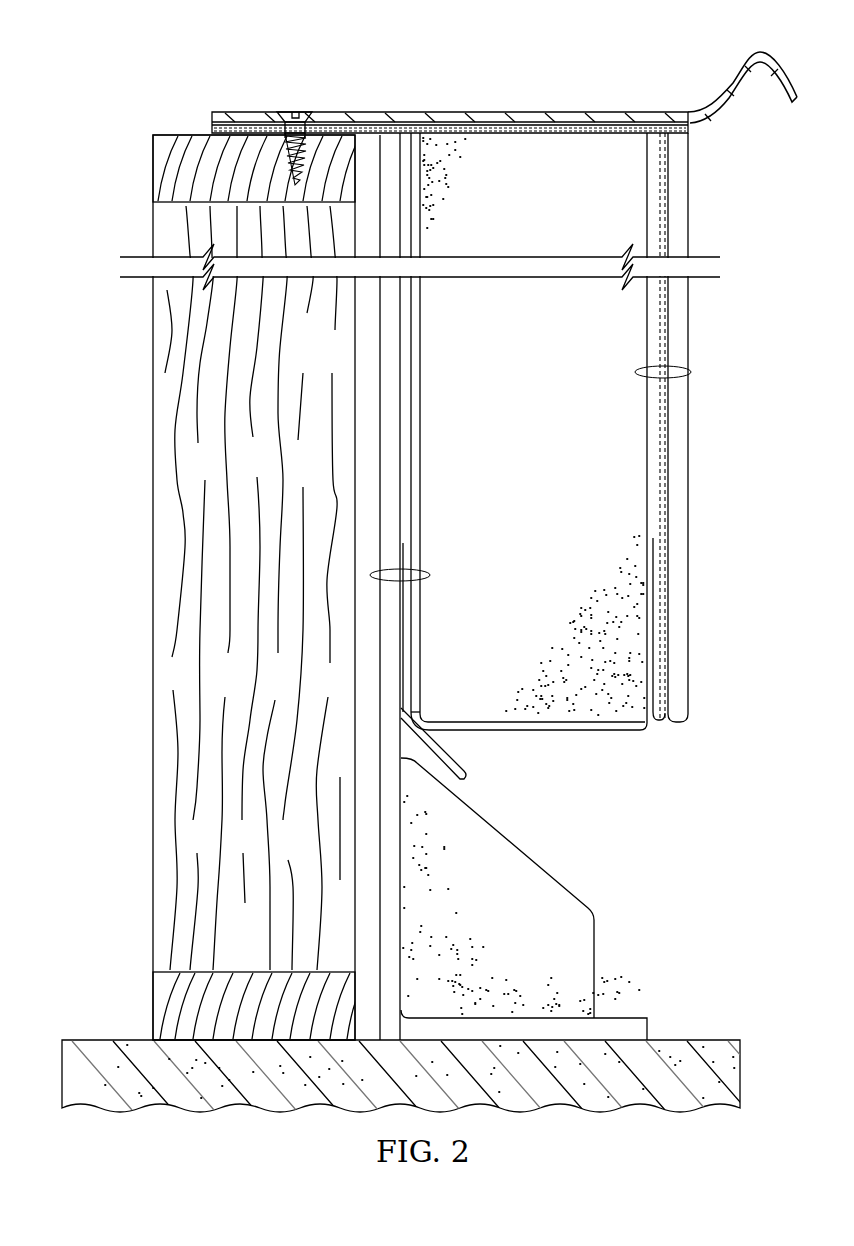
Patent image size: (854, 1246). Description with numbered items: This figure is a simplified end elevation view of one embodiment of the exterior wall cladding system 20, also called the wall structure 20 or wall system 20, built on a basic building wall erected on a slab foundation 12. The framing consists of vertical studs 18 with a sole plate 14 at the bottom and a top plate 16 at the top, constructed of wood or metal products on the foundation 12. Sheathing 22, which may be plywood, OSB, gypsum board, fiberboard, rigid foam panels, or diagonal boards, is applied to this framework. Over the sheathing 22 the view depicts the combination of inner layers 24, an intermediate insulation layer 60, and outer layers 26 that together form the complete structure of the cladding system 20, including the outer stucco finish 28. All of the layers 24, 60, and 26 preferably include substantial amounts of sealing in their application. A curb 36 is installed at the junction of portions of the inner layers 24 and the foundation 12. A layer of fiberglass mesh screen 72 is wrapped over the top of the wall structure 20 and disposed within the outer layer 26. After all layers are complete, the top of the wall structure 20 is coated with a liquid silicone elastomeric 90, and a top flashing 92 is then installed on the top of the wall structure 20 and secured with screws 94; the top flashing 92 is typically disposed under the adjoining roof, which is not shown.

The slab foundation 12 is at (700, 1040).
The sole plate 14 is at (235, 972).
The top plate 16 is at (185, 133).
The studs 18 is at (158, 588).
The exterior wall cladding system 20 is at (582, 586).
The sheathing 22 is at (358, 366).
The inner layers 24 is at (430, 576).
The outer layers 26 is at (690, 372).
The outer stucco finish 28 is at (675, 470).
The curb 36 is at (527, 855).
The intermediate insulation layer 60 is at (546, 463).
The fiberglass mesh screen 72 is at (647, 147).
The liquid silicone elastomeric 90 is at (502, 128).
The top flashing 92 is at (760, 50).
The screws 94 is at (292, 112).